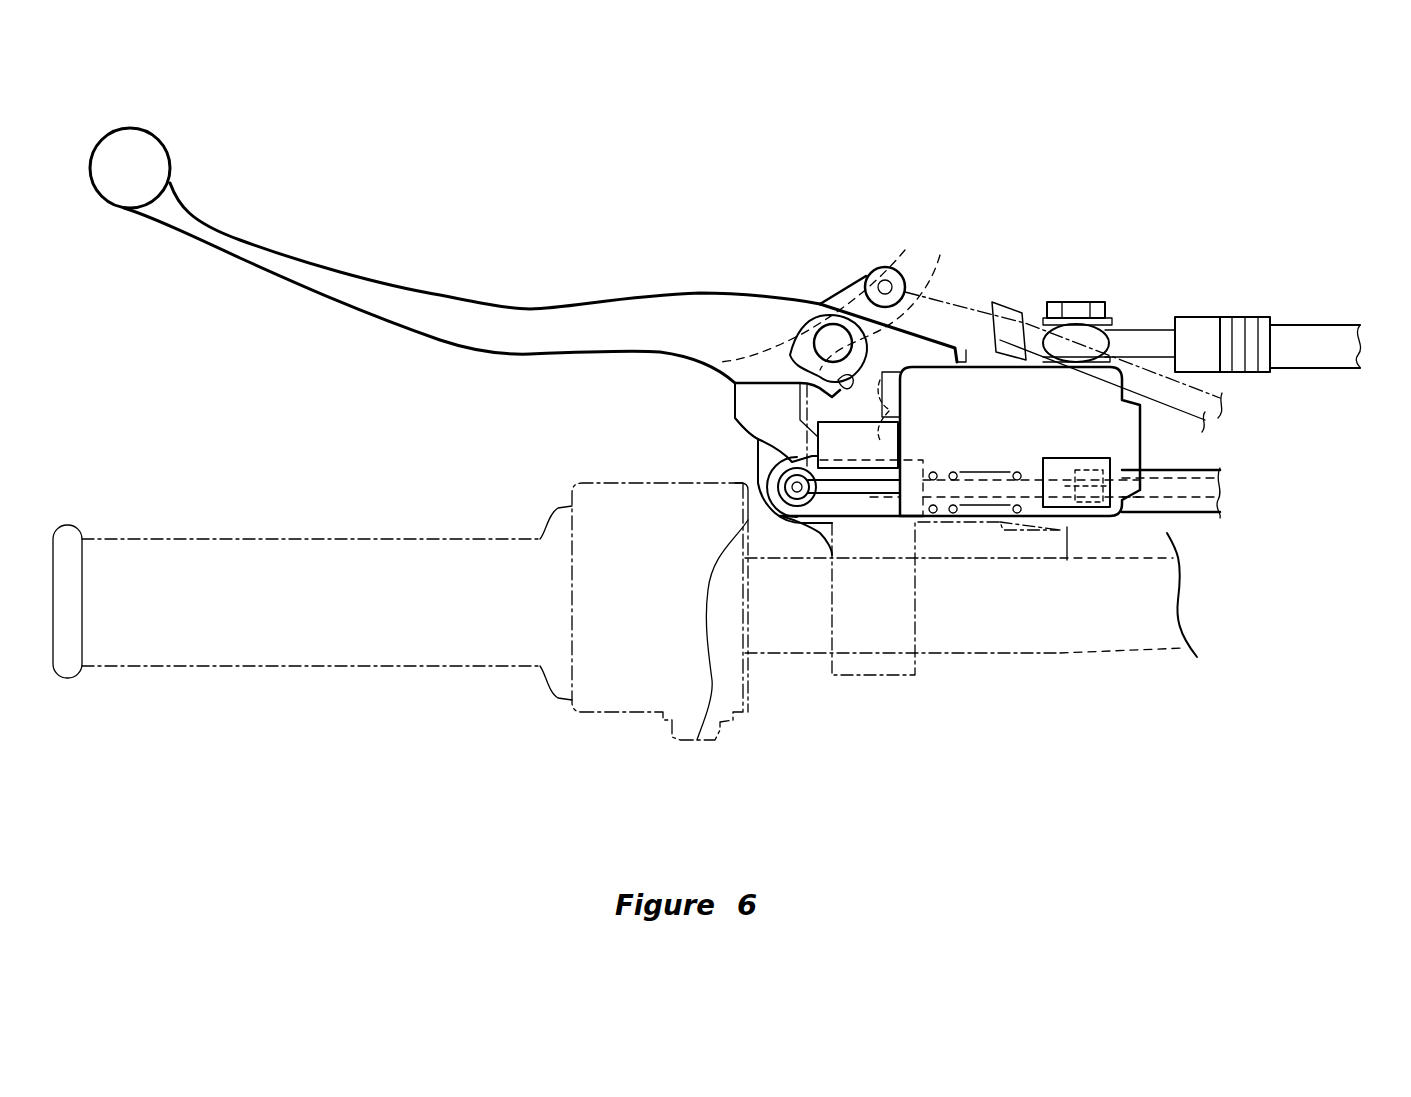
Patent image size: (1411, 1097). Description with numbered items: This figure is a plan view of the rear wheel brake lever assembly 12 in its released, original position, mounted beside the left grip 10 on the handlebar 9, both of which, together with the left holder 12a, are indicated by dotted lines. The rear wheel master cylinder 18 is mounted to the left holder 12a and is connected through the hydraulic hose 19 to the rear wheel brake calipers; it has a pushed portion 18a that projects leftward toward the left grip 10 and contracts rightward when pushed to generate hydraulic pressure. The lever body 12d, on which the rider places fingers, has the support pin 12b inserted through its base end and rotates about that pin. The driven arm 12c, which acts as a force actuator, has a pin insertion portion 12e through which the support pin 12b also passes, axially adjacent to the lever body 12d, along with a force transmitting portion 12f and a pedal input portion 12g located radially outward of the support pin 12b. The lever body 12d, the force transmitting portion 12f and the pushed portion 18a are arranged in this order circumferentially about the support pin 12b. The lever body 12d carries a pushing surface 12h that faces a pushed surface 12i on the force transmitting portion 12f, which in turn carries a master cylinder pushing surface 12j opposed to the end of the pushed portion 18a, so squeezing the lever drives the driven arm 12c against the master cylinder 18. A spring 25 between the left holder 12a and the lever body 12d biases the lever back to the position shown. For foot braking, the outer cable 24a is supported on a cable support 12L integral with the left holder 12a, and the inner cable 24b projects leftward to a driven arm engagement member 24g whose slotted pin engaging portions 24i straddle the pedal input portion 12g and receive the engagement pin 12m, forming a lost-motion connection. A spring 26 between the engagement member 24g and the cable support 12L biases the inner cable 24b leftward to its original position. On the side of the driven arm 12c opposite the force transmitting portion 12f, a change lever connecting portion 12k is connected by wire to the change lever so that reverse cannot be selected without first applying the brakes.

The rear wheel brake lever assembly 12 is at (823, 262).
The lever body 12d is at (345, 273).
The pushed surface 12i is at (778, 380).
The support pin 12b is at (835, 340).
The change lever connecting portion 12k is at (896, 271).
The pin insertion portion 12e is at (950, 295).
The spring 25 is at (1030, 308).
The left holder 12a is at (1027, 310).
The hydraulic hose 19 is at (1300, 322).
The rear wheel master cylinder 18 is at (1125, 427).
The pushed portion 18a is at (880, 522).
The master cylinder pushing surface 12j is at (846, 500).
The pedal input portion 12g is at (787, 510).
The pin engaging portions 24i is at (785, 495).
The engagement pin 12m is at (697, 742).
The left grip 10 is at (325, 668).
The pushing surface 12h is at (735, 398).
The driven arm 12c is at (733, 423).
The force transmitting portion 12f is at (740, 445).
The outer cable 24a is at (1183, 507).
The inner cable 24b is at (1150, 510).
The cable support 12L is at (1067, 530).
The handlebar 9 is at (1030, 653).
The spring 26 is at (1000, 518).
The driven arm engagement member 24g is at (887, 520).